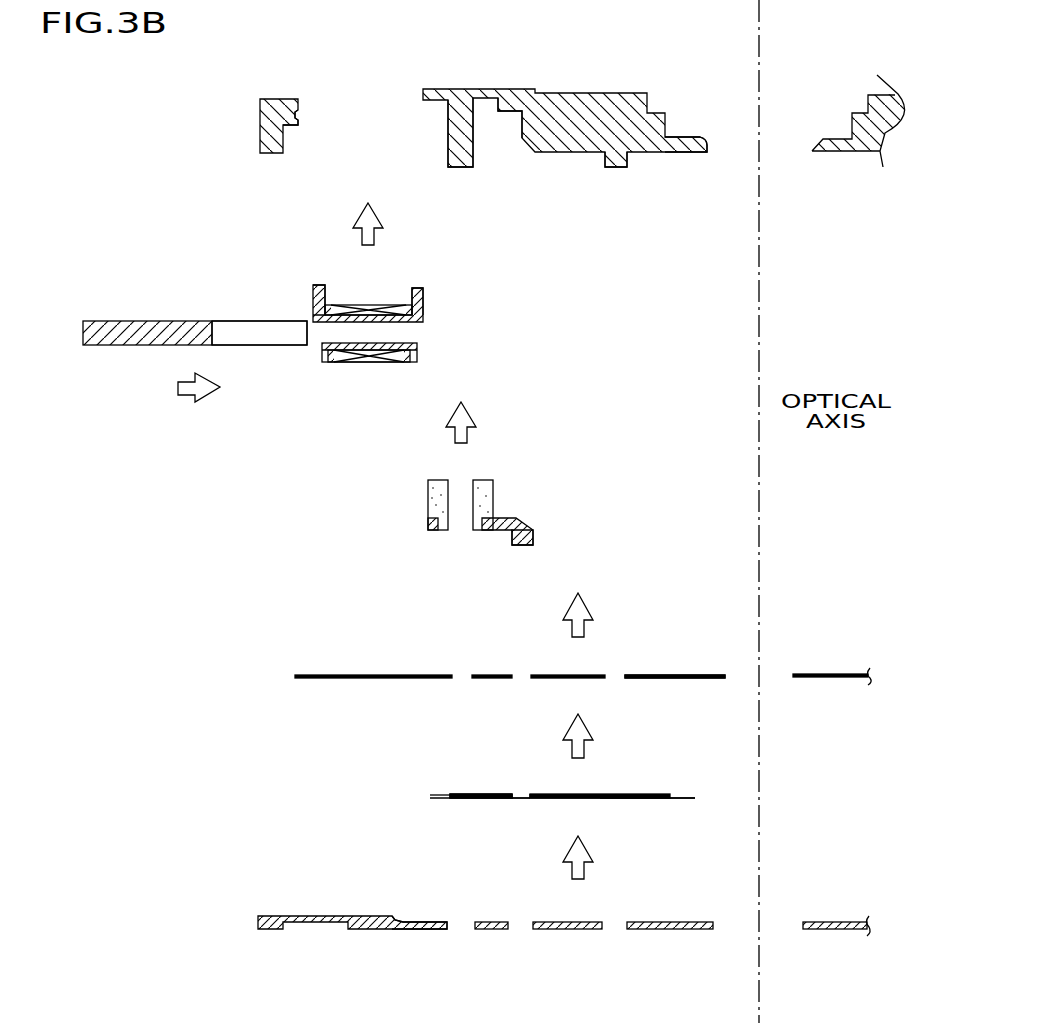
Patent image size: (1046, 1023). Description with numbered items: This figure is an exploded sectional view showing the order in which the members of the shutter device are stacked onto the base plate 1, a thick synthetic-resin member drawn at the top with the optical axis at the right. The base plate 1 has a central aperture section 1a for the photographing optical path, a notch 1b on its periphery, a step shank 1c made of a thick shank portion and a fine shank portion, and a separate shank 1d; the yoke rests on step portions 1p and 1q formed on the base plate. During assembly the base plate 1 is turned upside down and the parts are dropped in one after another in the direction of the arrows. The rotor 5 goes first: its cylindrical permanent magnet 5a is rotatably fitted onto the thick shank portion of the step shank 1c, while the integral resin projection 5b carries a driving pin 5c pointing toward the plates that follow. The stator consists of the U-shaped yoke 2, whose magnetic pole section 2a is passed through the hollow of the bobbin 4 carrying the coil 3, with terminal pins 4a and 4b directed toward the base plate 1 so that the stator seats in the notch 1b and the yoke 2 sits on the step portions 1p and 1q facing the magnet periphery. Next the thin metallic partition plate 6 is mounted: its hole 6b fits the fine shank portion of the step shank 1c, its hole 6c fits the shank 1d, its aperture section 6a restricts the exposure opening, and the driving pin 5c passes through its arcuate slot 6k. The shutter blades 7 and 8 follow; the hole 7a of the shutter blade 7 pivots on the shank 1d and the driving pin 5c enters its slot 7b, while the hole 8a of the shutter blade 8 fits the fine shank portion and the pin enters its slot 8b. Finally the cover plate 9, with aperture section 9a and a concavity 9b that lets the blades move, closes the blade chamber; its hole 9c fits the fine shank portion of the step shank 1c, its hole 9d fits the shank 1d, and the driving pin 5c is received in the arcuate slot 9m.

The base plate 1 is at (577, 99).
The aperture section 1a is at (707, 150).
The notch 1b is at (307, 103).
The step shank 1c is at (458, 162).
The shank 1d is at (615, 167).
The step portion 1p is at (298, 112).
The step portion 1q is at (505, 112).
The yoke 2 is at (178, 304).
The magnetic pole section 2a is at (235, 333).
The coil 3 is at (340, 357).
The bobbin 4 is at (365, 324).
The terminal pin 4a is at (315, 288).
The terminal pin 4b is at (423, 295).
The rotor 5 is at (456, 513).
The permanent magnet 5a is at (438, 500).
The projection 5b is at (492, 530).
The driving pin 5c is at (517, 547).
The partition plate 6 is at (579, 677).
The aperture section 6a is at (725, 675).
The hole 6b is at (462, 675).
The hole 6c is at (617, 675).
The arcuate slot 6k is at (522, 675).
The shutter blade 7 is at (440, 792).
The hole 7a is at (463, 792).
The slot 7b is at (522, 795).
The shutter blade 8 is at (525, 796).
The hole 8a is at (615, 798).
The slot 8b is at (520, 797).
The cover plate 9 is at (275, 915).
The aperture section 9a is at (768, 927).
The concavity 9b is at (402, 918).
The hole 9c is at (462, 925).
The hole 9d is at (617, 925).
The arcuate slot 9m is at (522, 925).